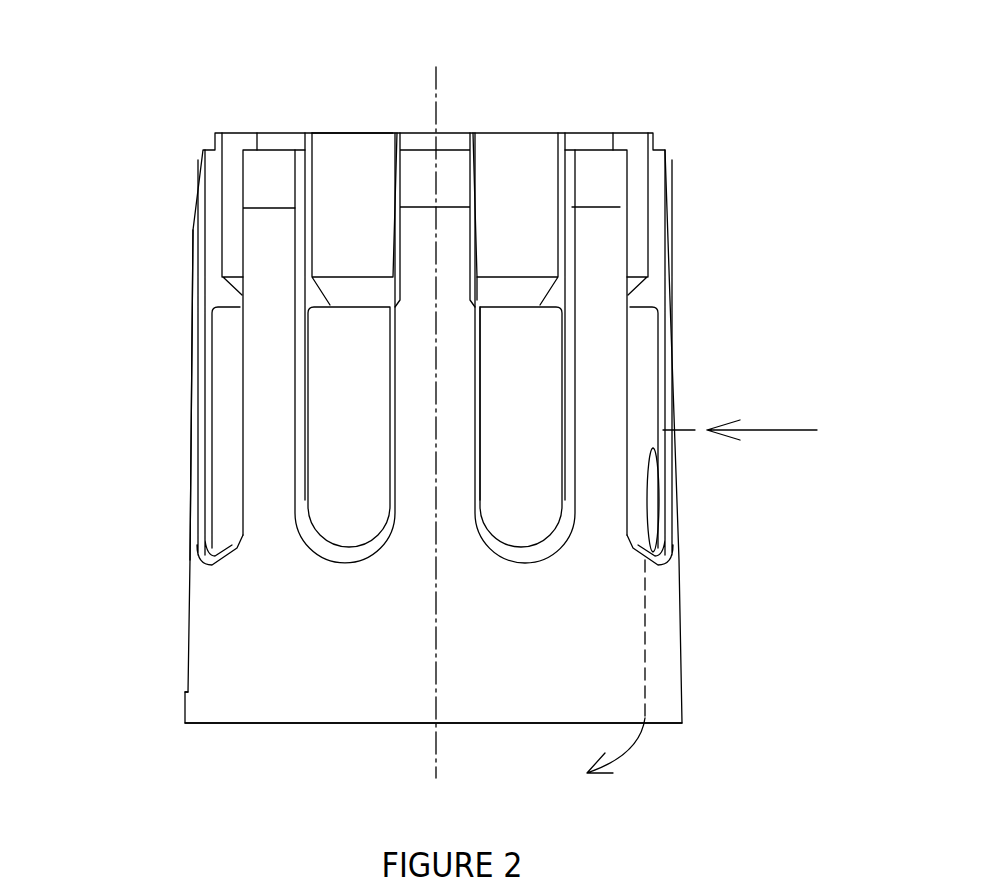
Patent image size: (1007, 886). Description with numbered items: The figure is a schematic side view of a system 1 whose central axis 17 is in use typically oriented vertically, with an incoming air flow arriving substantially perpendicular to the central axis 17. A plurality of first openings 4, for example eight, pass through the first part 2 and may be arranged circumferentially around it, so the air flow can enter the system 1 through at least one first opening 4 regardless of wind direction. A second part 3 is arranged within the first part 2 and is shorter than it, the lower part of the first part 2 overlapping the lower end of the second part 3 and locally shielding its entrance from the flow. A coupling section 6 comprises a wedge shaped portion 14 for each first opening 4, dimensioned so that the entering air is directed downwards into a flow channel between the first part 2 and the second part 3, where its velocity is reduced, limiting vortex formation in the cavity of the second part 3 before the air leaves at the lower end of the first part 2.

The system 1 is at (446, 389).
The first part 2 is at (245, 637).
The second part 3 is at (535, 397).
The first openings 4 is at (227, 480).
The coupling section 6 is at (360, 162).
The wedge shaped portion 14 is at (502, 290).
The central axis 17 is at (437, 228).